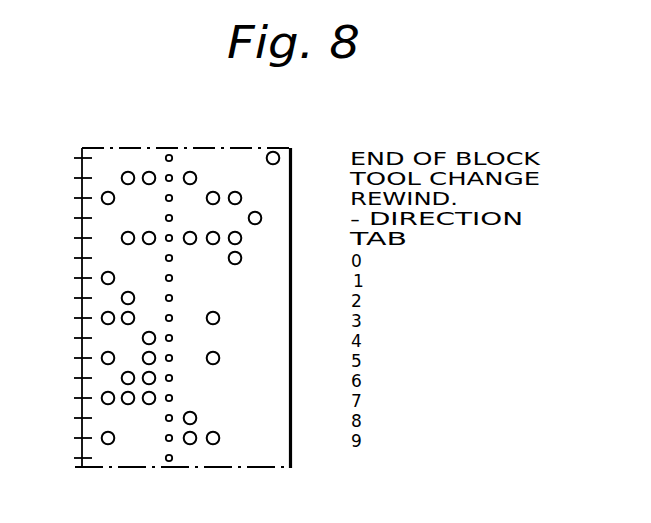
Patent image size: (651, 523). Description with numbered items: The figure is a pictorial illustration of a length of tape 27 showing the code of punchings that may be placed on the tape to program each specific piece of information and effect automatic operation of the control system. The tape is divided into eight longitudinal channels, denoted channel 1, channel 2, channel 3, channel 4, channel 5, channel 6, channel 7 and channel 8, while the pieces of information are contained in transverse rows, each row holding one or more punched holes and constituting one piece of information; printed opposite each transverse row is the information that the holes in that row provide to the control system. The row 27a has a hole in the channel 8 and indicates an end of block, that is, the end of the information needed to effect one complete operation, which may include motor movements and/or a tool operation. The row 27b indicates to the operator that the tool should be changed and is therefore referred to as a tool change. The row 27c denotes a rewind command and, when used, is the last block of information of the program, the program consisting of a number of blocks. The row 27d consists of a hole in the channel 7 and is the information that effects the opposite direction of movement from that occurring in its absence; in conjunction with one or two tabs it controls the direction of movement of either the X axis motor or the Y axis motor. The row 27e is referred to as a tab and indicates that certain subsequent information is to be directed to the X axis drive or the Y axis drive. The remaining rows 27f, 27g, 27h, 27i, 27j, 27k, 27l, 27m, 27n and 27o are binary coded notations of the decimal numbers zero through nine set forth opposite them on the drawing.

The tape 27 is at (138, 432).
The end of block row 27a is at (156, 158).
The tool change row 27b is at (114, 178).
The rewind row 27c is at (137, 198).
The direction row 27d is at (147, 218).
The tab row 27e is at (137, 238).
The binary coded row 27f is at (137, 258).
The binary coded row 27g is at (73, 278).
The binary coded row 27h is at (83, 298).
The binary coded row 27i is at (126, 318).
The binary coded row 27j is at (94, 338).
The binary coded row 27k is at (126, 358).
The binary coded row 27l is at (94, 378).
The binary coded row 27m is at (94, 398).
The binary coded row 27n is at (114, 418).
The binary coded row 27o is at (126, 438).
The longitudinal channel 1 is at (108, 112).
The longitudinal channel 2 is at (128, 112).
The longitudinal channel 3 is at (148, 112).
The longitudinal channel 4 is at (191, 171).
The longitudinal channel 5 is at (213, 191).
The longitudinal channel 6 is at (235, 191).
The longitudinal channel 7 is at (255, 211).
The longitudinal channel 8 is at (272, 151).